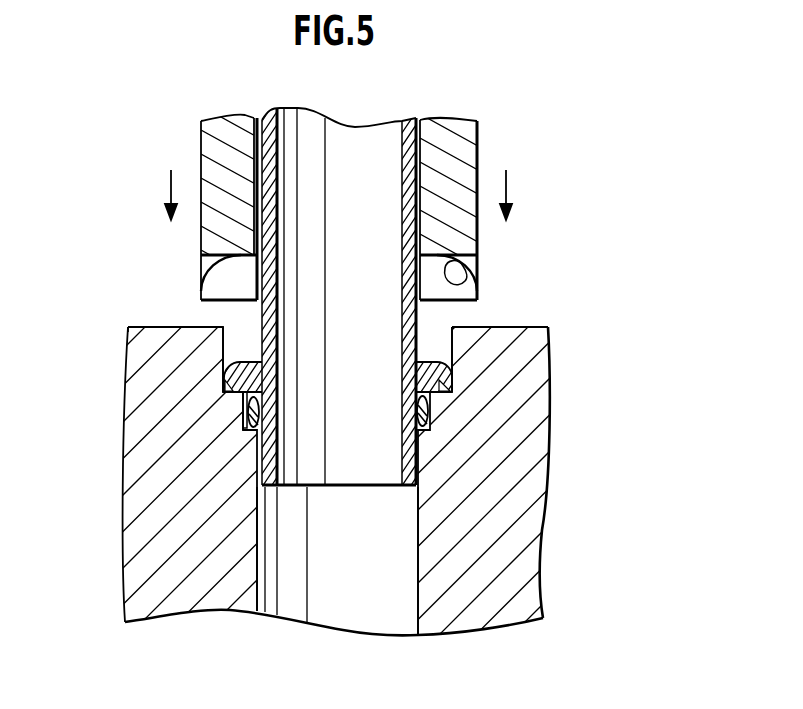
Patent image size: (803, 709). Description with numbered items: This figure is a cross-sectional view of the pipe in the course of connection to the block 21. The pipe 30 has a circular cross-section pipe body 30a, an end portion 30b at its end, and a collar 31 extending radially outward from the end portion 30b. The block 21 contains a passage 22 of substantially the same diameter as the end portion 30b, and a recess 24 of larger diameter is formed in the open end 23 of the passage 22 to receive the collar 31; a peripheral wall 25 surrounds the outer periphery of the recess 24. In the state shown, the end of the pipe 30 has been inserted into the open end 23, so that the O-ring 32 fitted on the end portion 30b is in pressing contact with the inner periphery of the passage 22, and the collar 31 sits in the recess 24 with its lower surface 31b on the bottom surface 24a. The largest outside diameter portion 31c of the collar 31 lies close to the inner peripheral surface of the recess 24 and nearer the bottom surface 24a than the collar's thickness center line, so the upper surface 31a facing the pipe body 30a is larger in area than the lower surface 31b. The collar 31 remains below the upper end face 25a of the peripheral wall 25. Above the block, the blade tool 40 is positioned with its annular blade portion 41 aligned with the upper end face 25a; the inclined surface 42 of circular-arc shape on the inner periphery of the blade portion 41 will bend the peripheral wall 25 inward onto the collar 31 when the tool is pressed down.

The block 21 is at (493, 523).
The passage 22 is at (383, 588).
The open end 23 is at (423, 342).
The recess 24 is at (354, 296).
The bottom surface 24a is at (441, 388).
The peripheral wall 25 is at (212, 336).
The upper end face 25a is at (162, 326).
The pipe 30 is at (354, 271).
The pipe body 30a is at (416, 165).
The end portion 30b is at (418, 472).
The collar 31 is at (354, 296).
The upper surface 31a is at (228, 358).
The lower surface 31b is at (246, 426).
The largest outside diameter portion 31c is at (243, 397).
The O-ring 32 is at (252, 430).
The blade tool 40 is at (411, 203).
The annular blade portion 41 is at (478, 300).
The inclined surface 42 is at (465, 282).